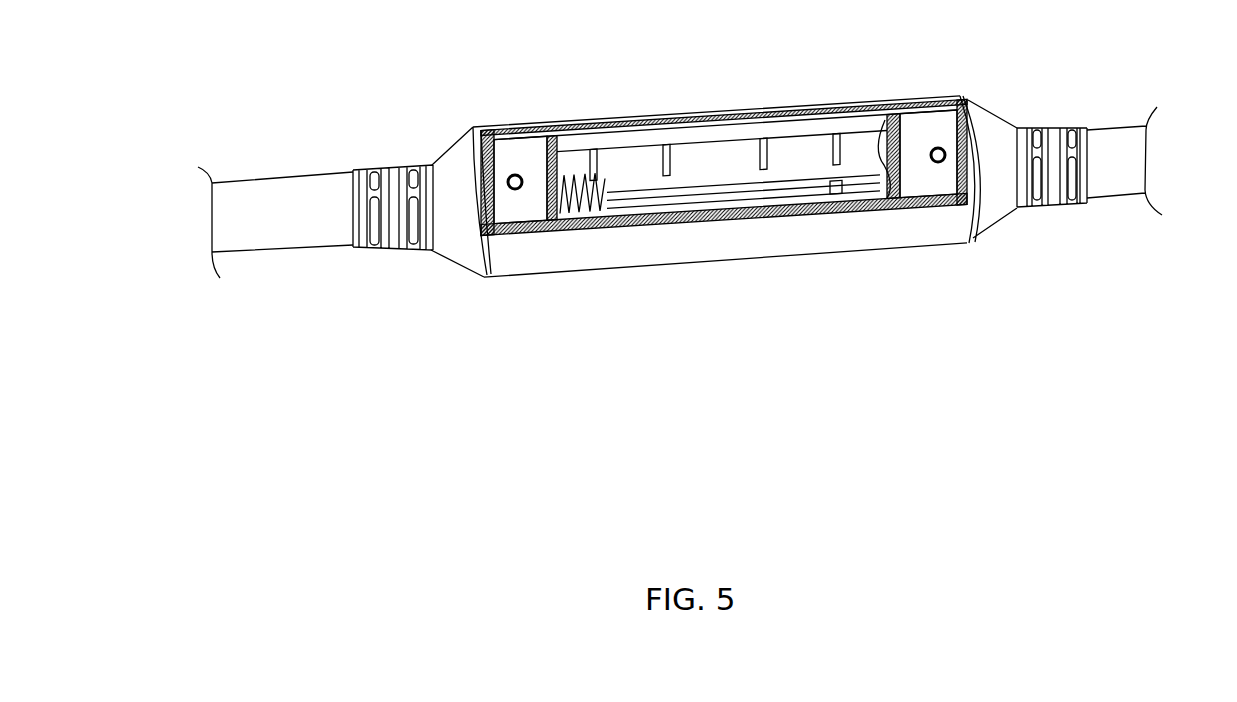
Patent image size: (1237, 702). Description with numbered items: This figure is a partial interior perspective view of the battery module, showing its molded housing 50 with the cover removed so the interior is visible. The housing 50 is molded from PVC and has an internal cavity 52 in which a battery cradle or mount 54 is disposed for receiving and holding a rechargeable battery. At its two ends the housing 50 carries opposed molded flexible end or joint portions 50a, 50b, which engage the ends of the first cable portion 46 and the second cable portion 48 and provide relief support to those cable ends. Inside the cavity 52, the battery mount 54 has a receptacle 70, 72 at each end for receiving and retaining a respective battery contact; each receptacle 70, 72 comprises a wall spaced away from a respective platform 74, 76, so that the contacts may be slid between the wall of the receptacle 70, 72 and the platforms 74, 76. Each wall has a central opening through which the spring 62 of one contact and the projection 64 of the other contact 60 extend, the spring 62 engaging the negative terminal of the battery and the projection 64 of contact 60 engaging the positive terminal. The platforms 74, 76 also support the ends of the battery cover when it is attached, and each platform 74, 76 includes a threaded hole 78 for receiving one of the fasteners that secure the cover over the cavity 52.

The first cable portion 46 is at (240, 183).
The second cable portion 48 is at (1130, 120).
The molded housing 50 is at (770, 243).
The flexible end portion 50a is at (388, 249).
The flexible end portion 50b is at (1060, 207).
The internal cavity 52 is at (725, 157).
The battery mount 54 is at (750, 110).
The battery contact 60 is at (905, 125).
The spring 62 is at (612, 165).
The projection 64 is at (863, 213).
The receptacle 70 is at (553, 213).
The receptacle 72 is at (890, 128).
The platform 74 is at (512, 155).
The platform 76 is at (940, 132).
The threaded hole 78 is at (516, 190).